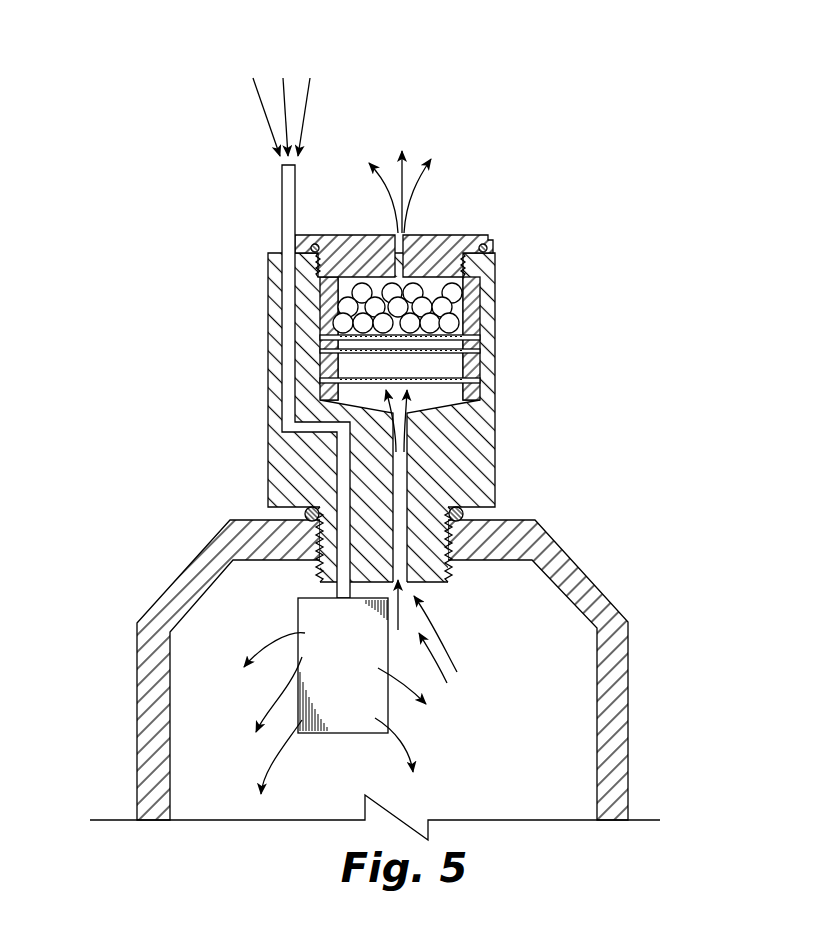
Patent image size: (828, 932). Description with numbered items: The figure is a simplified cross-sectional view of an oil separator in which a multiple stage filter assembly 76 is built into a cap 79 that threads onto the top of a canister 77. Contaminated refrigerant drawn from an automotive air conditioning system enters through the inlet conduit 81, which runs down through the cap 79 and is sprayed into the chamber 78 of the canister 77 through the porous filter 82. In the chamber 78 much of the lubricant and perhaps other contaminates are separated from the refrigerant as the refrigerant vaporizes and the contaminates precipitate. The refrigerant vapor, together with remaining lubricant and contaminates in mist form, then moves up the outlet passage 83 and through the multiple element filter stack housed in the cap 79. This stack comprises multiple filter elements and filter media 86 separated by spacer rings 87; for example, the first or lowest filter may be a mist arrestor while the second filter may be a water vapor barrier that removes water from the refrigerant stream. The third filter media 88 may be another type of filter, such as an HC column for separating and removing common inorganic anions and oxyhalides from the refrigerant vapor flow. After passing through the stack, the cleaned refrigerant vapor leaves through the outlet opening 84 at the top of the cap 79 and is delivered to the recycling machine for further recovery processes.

The filter assembly 76 is at (541, 322).
The tank 77 is at (562, 543).
The chamber 78 is at (533, 754).
The housing body 79 is at (514, 410).
The inlet conduit 81 is at (281, 210).
The porous filter 82 is at (373, 703).
The outlet passage 83 is at (400, 497).
The outlet opening 84 is at (411, 229).
The filter elements and filter media 86 is at (345, 376).
The spacer rings 87 is at (480, 382).
The third filter media 88 is at (433, 292).